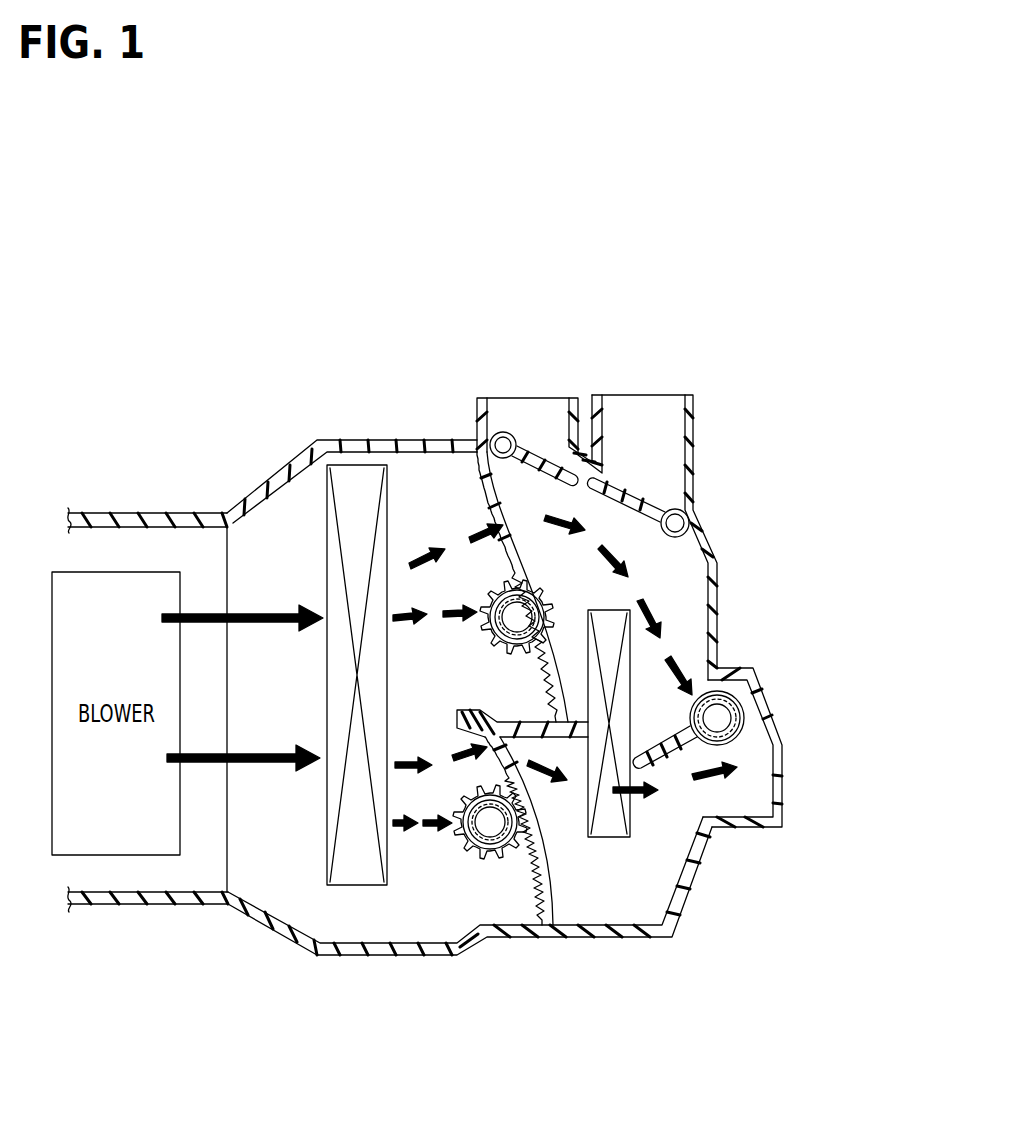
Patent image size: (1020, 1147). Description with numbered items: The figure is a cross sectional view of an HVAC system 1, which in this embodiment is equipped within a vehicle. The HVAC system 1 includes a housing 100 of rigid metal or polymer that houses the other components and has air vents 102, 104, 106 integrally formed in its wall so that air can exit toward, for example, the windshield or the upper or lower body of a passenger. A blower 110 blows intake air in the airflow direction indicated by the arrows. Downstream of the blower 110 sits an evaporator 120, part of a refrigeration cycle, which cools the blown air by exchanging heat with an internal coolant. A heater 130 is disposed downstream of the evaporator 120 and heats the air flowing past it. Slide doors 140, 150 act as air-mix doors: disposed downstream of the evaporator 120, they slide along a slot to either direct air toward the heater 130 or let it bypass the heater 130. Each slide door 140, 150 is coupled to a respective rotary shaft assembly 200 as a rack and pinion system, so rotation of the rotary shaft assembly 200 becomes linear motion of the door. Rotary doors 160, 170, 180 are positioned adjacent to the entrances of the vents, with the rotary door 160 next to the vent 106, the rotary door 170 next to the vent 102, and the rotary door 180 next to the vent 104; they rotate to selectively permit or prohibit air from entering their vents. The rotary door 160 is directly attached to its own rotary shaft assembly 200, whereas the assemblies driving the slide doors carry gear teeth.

The HVAC system 1 is at (240, 412).
The housing 100 is at (125, 513).
The blower 110 is at (128, 858).
The air vent 102 is at (545, 410).
The air vent 104 is at (657, 410).
The air vent 106 is at (748, 792).
The evaporator 120 is at (357, 886).
The heater 130 is at (612, 840).
The slide door 140 is at (547, 647).
The slide door 150 is at (527, 857).
The rotary door 160 is at (687, 743).
The rotary door 170 is at (505, 432).
The rotary door 180 is at (693, 507).
The rotary shaft assembly 200 is at (493, 592).